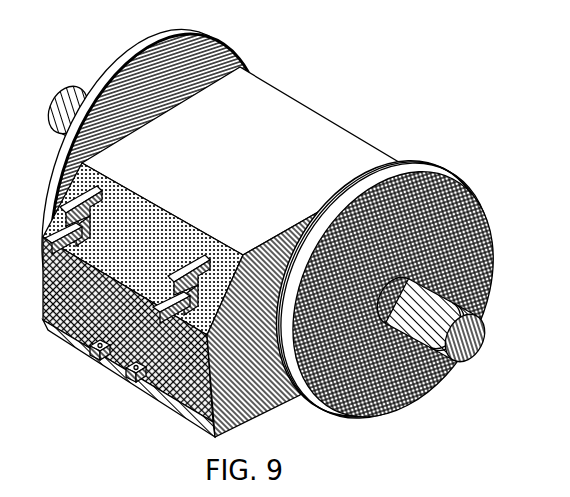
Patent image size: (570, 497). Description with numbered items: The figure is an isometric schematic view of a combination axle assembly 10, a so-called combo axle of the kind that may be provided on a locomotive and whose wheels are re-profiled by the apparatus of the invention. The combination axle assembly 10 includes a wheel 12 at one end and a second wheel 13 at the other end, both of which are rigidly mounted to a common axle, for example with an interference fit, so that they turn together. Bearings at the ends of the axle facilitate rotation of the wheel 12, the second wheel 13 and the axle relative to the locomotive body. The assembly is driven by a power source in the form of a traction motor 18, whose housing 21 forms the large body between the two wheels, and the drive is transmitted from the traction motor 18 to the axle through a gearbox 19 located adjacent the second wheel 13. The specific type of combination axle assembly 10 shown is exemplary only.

The combination axle assembly 10 is at (385, 83).
The wheel 12 is at (488, 230).
The second wheel 13 is at (117, 55).
The traction motor 18 is at (62, 350).
The gearbox 19 is at (233, 53).
The housing 21 is at (268, 158).